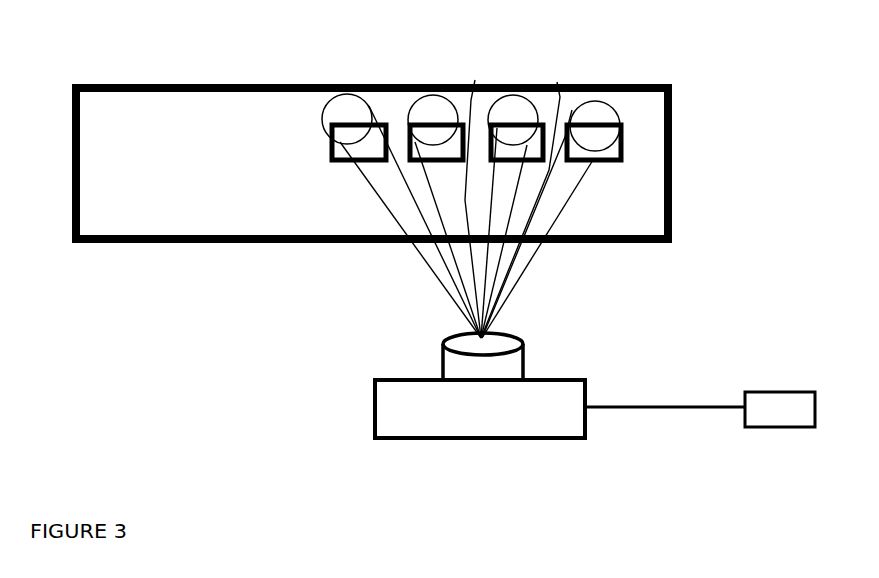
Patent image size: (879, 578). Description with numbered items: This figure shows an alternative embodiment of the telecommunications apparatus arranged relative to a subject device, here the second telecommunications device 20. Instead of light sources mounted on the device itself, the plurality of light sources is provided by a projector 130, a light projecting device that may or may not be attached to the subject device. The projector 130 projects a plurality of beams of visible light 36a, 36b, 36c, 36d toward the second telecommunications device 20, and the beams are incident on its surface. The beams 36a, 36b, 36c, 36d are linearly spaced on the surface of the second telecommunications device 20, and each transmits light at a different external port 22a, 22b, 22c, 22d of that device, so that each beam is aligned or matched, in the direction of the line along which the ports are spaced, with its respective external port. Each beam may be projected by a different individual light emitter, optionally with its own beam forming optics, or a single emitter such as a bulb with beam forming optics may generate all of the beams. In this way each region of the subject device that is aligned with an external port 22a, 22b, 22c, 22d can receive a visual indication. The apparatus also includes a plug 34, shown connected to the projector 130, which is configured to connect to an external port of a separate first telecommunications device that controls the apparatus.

The second telecommunications device 20 is at (372, 163).
The external port 22a is at (340, 143).
The external port 22b is at (475, 82).
The external port 22c is at (557, 83).
The external port 22d is at (608, 163).
The beam of visible light 36a is at (357, 117).
The beam of visible light 36b is at (440, 112).
The beam of visible light 36c is at (518, 112).
The beam of visible light 36d is at (602, 110).
The projector 130 is at (443, 370).
The plug 34 is at (700, 409).